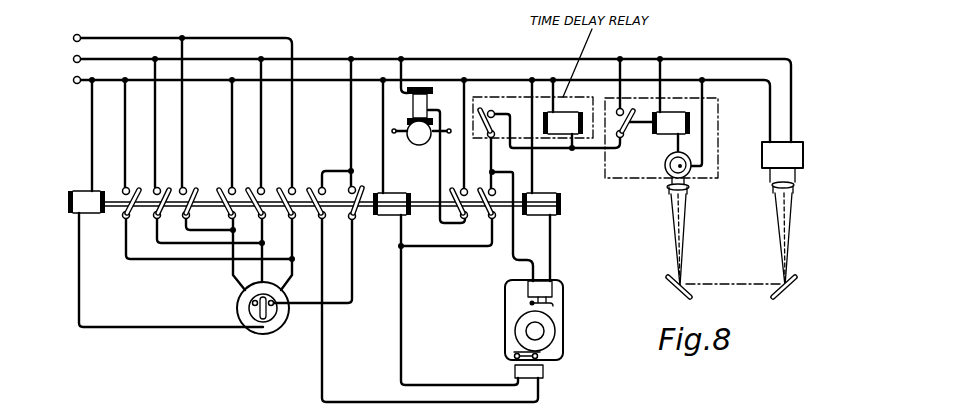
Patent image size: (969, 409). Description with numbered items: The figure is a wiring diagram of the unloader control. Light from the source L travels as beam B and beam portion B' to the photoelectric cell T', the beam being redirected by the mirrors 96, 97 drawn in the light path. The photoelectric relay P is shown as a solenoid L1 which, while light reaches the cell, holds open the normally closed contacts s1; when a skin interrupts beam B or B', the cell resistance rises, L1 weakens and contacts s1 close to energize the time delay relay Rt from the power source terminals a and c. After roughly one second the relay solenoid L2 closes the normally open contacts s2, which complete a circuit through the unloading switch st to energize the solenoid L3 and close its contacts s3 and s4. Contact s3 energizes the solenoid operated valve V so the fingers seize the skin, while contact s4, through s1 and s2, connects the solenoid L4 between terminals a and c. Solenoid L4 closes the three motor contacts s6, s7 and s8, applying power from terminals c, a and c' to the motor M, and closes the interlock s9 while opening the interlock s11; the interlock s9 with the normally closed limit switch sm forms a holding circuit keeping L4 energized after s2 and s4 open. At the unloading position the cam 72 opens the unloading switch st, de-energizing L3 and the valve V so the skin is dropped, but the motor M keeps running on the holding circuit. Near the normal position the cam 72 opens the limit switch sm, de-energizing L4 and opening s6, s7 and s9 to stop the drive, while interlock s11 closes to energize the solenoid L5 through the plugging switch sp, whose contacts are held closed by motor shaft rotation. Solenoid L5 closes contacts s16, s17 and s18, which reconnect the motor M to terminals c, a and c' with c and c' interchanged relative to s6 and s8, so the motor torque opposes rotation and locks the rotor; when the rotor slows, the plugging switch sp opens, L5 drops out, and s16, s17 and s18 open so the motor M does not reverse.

The power source terminal c' is at (168, 108).
The power source terminal a is at (418, 96).
The power source terminal c is at (408, 106).
The solenoid L5 is at (80, 190).
The solenoid L4 is at (393, 192).
The solenoid L3 is at (537, 215).
The solenoid L2 is at (562, 131).
The solenoid L1 is at (668, 116).
The time delay relay Rt is at (566, 198).
The contacts s16 is at (125, 212).
The contacts s17 is at (167, 188).
The contacts s18 is at (197, 206).
The motor contacts s6 is at (229, 207).
The motor contacts s7 is at (247, 186).
The motor contacts s8 is at (278, 186).
The interlock s9 is at (309, 186).
The interlock s11 is at (358, 218).
The contacts s3 is at (453, 212).
The contacts s4 is at (486, 212).
The contacts s2 is at (481, 106).
The contacts s1 is at (627, 133).
The photoelectric relay P is at (618, 178).
The solenoid operated valve V is at (421, 116).
The motor M is at (283, 331).
The plugging switch sp is at (260, 312).
The cam 72 is at (518, 334).
The unloading switch st is at (552, 288).
The limit switch sm is at (545, 372).
The photoelectric cell T' is at (699, 176).
The light source L is at (798, 142).
The light beam portion B' is at (691, 240).
The light beam B is at (794, 239).
The mirror 97 is at (680, 296).
The mirror 96 is at (782, 294).